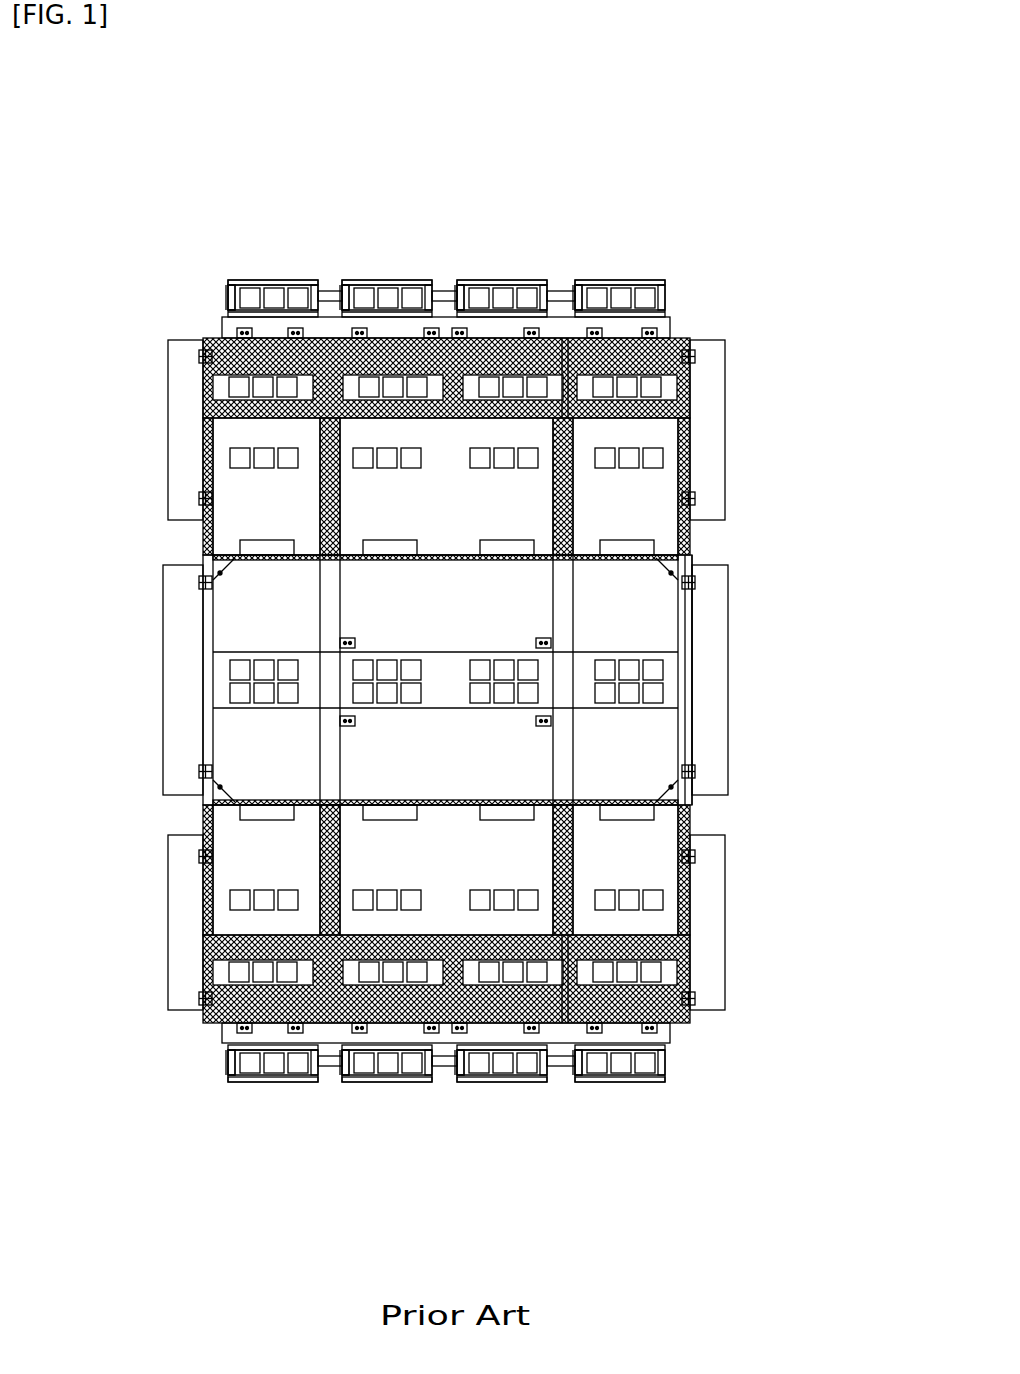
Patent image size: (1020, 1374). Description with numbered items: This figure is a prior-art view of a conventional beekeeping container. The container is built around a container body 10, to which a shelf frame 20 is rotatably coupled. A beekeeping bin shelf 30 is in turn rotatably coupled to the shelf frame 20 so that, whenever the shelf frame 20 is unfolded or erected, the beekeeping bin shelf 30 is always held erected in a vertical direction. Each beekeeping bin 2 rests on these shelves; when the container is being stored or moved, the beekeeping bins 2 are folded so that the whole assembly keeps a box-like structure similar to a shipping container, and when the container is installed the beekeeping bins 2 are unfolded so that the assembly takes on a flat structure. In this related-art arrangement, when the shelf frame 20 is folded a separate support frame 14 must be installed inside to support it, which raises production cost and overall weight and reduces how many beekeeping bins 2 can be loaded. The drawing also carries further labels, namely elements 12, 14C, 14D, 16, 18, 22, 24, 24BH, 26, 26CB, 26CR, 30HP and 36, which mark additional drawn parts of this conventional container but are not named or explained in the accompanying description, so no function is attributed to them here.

The beekeeping bin 2 is at (300, 270).
The container body 10 is at (785, 88).
The first chassis part 12 is at (222, 622).
The support frame 14 is at (590, 628).
The corner bracket 14C is at (215, 573).
The divider 14D is at (325, 737).
The module bay 16 is at (225, 483).
The side cover 18 is at (190, 392).
The shelf frame 20 is at (712, 548).
The side rail 22 is at (690, 338).
The mounting strip 24 is at (205, 308).
The bolt hole 24BH is at (220, 327).
The card module 26 is at (438, 302).
The card bottom 26CB is at (350, 308).
The card rail 26CR is at (222, 292).
The beekeeping bin shelf 30 is at (262, 270).
The top plate hinge part 30HP is at (222, 295).
The connector 36 is at (387, 282).